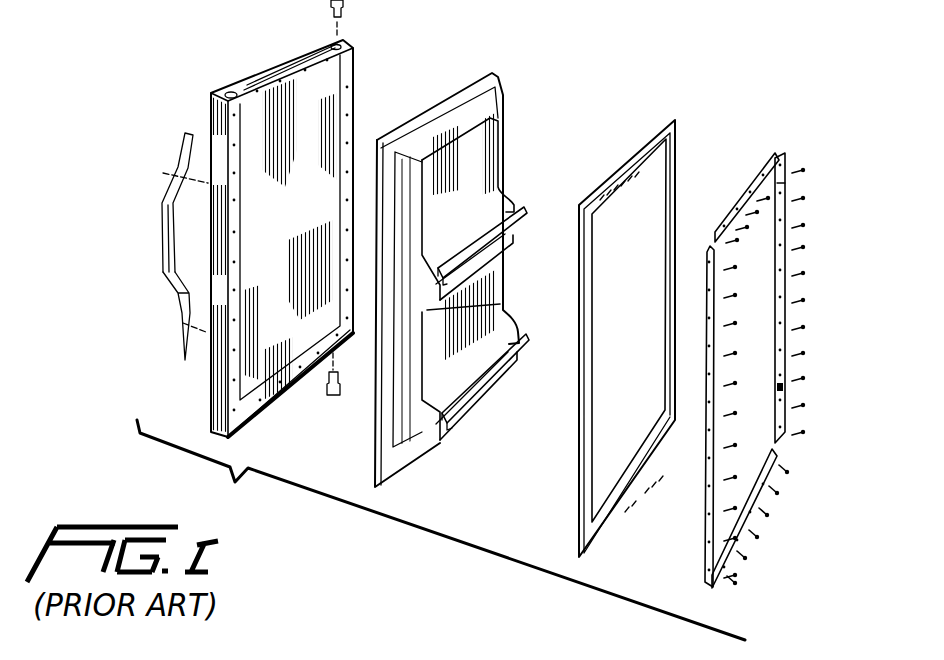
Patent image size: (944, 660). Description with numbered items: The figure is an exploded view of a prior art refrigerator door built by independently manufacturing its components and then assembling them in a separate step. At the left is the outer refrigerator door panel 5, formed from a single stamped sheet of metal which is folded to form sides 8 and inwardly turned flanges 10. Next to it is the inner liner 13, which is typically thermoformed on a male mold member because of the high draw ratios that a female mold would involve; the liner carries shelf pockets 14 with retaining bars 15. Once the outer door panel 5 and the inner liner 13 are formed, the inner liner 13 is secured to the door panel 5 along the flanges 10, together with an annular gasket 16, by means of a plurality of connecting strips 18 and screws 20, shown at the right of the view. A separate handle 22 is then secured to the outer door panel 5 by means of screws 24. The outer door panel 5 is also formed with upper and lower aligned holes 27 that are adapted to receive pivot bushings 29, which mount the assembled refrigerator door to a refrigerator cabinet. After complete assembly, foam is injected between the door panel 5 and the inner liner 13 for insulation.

The outer refrigerator door panel 5 is at (216, 83).
The sides 8 is at (268, 72).
The inwardly turned flanges 10 is at (237, 155).
The inner liner 13 is at (502, 93).
The shelf 14 is at (483, 268).
The shelf retainer bar 15 is at (520, 242).
The annular gasket 16 is at (673, 130).
The connecting strips 18 is at (781, 285).
The screws 20 is at (790, 378).
The handle 22 is at (165, 270).
The screws 24 is at (165, 313).
The upper and lower aligned holes 27 is at (347, 33).
The pivot bushings 29 is at (347, 5).